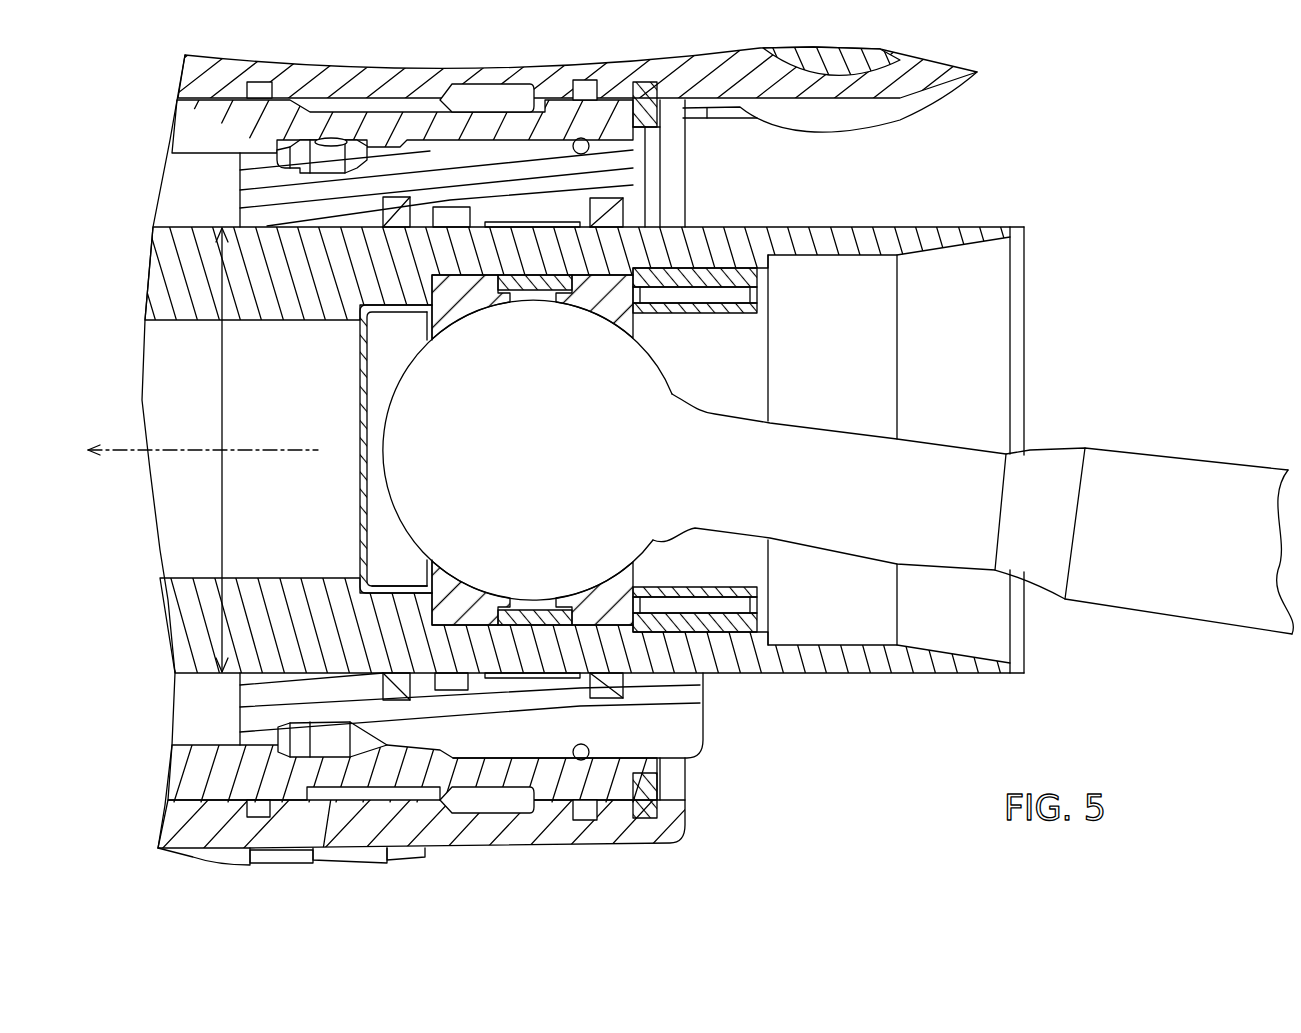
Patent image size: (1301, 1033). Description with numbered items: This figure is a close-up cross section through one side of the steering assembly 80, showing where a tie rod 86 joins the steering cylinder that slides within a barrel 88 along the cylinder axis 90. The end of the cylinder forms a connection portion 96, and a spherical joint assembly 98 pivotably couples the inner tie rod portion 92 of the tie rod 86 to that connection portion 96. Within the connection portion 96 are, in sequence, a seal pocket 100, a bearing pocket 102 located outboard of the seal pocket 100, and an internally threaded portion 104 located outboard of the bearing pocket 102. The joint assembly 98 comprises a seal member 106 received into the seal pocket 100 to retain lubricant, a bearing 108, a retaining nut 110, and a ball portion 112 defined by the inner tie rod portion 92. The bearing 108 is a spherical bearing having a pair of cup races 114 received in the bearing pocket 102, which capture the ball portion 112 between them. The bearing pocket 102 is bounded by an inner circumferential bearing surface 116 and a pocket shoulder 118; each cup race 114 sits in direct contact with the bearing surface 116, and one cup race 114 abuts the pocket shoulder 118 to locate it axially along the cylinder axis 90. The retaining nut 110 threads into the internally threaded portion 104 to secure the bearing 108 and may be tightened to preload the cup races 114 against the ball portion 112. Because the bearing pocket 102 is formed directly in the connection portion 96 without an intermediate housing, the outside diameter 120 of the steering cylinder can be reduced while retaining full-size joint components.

The steering assembly 80 is at (686, 460).
The tie rod 86 is at (1171, 620).
The barrel 88 is at (625, 828).
The cylinder axis 90 is at (145, 452).
The inner tie rod portion 92 is at (834, 415).
The connection portion 96 is at (763, 684).
The spherical joint assembly 98 is at (527, 188).
The seal pocket 100 is at (397, 583).
The bearing pocket 102 is at (562, 727).
The internally threaded portion 104 is at (675, 270).
The seal member 106 is at (360, 362).
The bearing 108 is at (500, 248).
The retaining nut 110 is at (760, 615).
The ball portion 112 is at (405, 440).
The cup races 114 is at (462, 292).
The inner circumferential bearing surface 116 is at (540, 620).
The pocket shoulder 118 is at (460, 607).
The outside diameter 120 is at (222, 403).